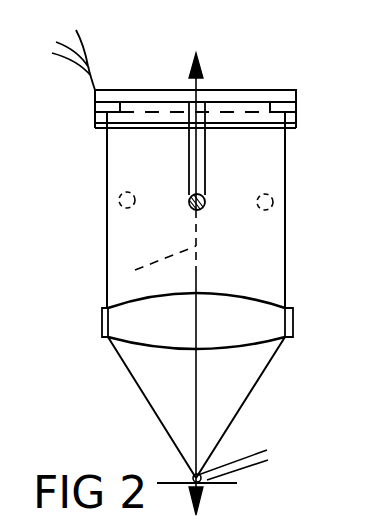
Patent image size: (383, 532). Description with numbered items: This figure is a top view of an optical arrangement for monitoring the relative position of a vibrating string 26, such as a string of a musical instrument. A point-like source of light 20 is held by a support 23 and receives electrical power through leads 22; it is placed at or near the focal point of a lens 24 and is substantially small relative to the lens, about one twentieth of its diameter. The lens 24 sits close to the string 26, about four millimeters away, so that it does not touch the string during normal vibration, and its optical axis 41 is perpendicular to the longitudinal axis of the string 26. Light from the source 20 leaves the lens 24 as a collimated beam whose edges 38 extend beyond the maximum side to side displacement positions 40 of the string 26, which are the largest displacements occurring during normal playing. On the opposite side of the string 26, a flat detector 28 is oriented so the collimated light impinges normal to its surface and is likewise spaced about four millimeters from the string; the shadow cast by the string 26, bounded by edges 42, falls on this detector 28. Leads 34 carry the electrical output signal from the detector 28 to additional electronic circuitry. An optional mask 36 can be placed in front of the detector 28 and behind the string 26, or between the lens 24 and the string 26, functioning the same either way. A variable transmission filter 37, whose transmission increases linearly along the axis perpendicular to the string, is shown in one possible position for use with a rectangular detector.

The point-like source of light 20 is at (194, 474).
The leads 22 is at (250, 447).
The support 23 is at (160, 483).
The lens 24 is at (265, 312).
The string 26 is at (203, 209).
The flat detector 28 is at (280, 90).
The leads 34 is at (88, 56).
The mask 36 is at (297, 108).
The variable transmission filter 37 is at (95, 128).
The edges of collimated beam 38 is at (107, 240).
The maximum side to side displacement positions 40 is at (118, 197).
The optical axis 41 is at (135, 270).
The shadow edges 42 is at (188, 170).